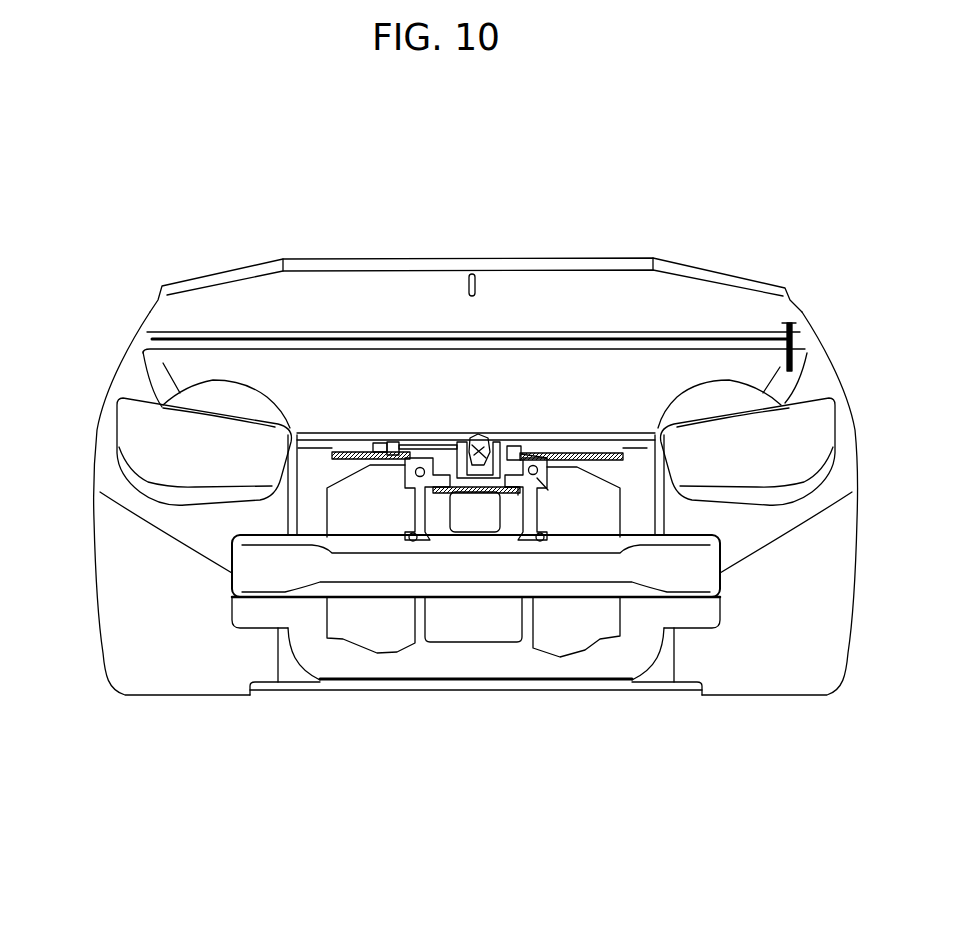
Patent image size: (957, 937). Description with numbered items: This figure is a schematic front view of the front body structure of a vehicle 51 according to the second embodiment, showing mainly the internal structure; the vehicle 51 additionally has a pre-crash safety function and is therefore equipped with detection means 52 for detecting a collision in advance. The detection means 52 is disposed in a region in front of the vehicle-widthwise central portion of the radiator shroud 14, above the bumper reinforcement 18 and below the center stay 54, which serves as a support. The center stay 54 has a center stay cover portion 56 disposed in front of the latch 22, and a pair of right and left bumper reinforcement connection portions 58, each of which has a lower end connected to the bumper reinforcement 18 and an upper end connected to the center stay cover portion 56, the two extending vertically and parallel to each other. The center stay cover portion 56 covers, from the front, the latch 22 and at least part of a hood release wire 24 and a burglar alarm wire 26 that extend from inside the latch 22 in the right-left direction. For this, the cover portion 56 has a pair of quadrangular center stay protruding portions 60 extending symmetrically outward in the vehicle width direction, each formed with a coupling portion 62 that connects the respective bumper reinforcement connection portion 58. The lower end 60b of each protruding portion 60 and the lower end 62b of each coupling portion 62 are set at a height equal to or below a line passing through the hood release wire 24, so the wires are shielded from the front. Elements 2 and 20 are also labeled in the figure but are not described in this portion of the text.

The trunk lid 2 is at (767, 281).
The radiator shroud 14 is at (322, 460).
The bumper reinforcement 18 is at (350, 590).
The rear bumper 20 is at (383, 570).
The latch 22 is at (482, 448).
The hood release wire 24 is at (625, 460).
The burglar alarm wire 26 is at (358, 455).
The vehicle 51 is at (131, 278).
The detection means 52 is at (473, 517).
The center stay 54 is at (442, 452).
The center stay cover portion 56 is at (495, 452).
The bumper reinforcement connection portions 58 is at (410, 493).
The center stay protruding portions 60 is at (512, 462).
The lower end of center stay protruding portion 60b is at (513, 490).
The coupling portion 62 is at (405, 450).
The lower end of coupling portion 62b is at (548, 490).